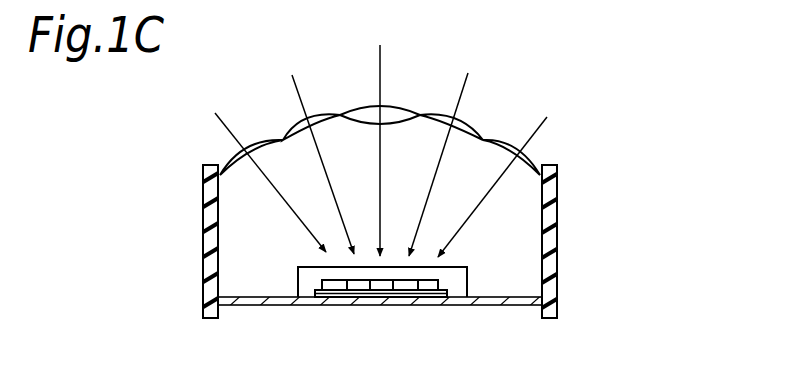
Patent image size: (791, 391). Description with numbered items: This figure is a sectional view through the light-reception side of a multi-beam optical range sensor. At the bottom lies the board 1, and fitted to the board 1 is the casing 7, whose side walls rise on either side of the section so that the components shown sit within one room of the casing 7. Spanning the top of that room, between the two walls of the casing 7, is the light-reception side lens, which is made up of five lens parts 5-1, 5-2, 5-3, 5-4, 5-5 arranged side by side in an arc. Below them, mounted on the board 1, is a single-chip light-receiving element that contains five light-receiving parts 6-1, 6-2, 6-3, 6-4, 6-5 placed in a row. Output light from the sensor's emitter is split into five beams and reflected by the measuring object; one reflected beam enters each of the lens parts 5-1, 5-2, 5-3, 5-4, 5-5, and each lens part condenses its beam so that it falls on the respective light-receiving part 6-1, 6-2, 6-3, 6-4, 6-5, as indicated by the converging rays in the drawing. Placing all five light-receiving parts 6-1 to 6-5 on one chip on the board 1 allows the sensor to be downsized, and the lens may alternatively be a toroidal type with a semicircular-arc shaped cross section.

The board 1 is at (529, 309).
The casing 7 is at (565, 227).
The lens part 5-1 is at (230, 152).
The lens part 5-2 is at (291, 117).
The lens part 5-3 is at (362, 101).
The lens part 5-4 is at (471, 120).
The lens part 5-5 is at (535, 157).
The light-receiving part 6-1 is at (323, 304).
The light-receiving part 6-2 is at (350, 301).
The light-receiving part 6-3 is at (383, 301).
The light-receiving part 6-4 is at (413, 302).
The light-receiving part 6-5 is at (444, 302).